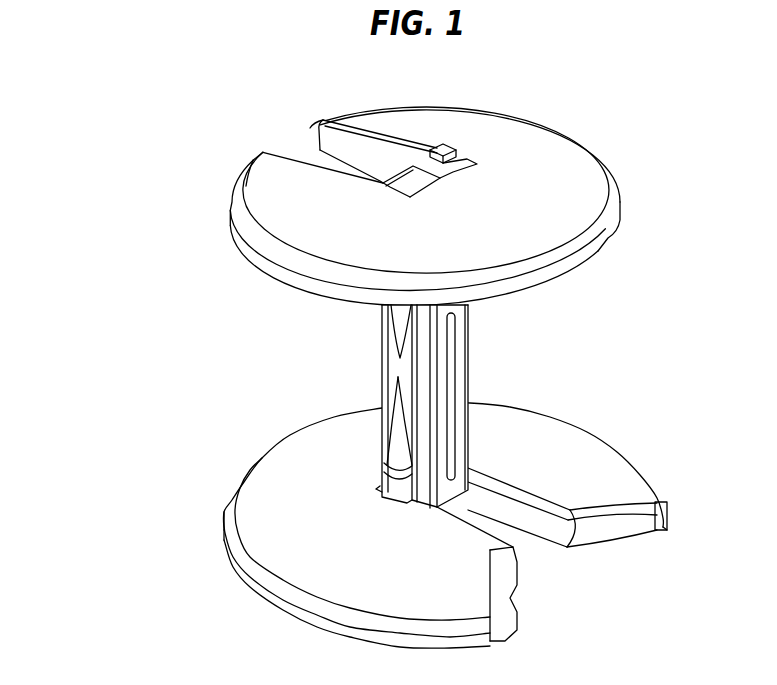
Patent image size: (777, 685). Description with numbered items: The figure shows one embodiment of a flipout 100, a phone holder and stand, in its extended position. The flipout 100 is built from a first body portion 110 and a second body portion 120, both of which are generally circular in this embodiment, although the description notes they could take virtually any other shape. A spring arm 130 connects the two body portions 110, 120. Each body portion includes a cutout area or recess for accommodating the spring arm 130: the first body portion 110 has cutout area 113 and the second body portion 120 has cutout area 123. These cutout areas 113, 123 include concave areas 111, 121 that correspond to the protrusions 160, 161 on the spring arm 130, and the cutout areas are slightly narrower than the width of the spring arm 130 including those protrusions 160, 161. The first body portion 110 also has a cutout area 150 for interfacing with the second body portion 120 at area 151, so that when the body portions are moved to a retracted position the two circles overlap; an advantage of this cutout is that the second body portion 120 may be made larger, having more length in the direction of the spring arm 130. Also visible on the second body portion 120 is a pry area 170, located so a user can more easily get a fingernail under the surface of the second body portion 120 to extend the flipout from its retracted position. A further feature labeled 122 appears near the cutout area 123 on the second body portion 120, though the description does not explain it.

The flipout 100 is at (94, 168).
The first body portion 110 is at (265, 531).
The concave area 111 is at (551, 536).
The cutout area 113 is at (527, 562).
The second body portion 120 is at (281, 211).
The concave area 121 is at (330, 139).
The tab 122 is at (463, 152).
The cutout area 123 is at (292, 133).
The spring arm 130 is at (461, 360).
The cutout area 150 is at (625, 522).
The interfacing area 151 is at (236, 161).
The protrusion 160 is at (396, 415).
The protrusion 161 is at (396, 332).
The pry area 170 is at (594, 252).